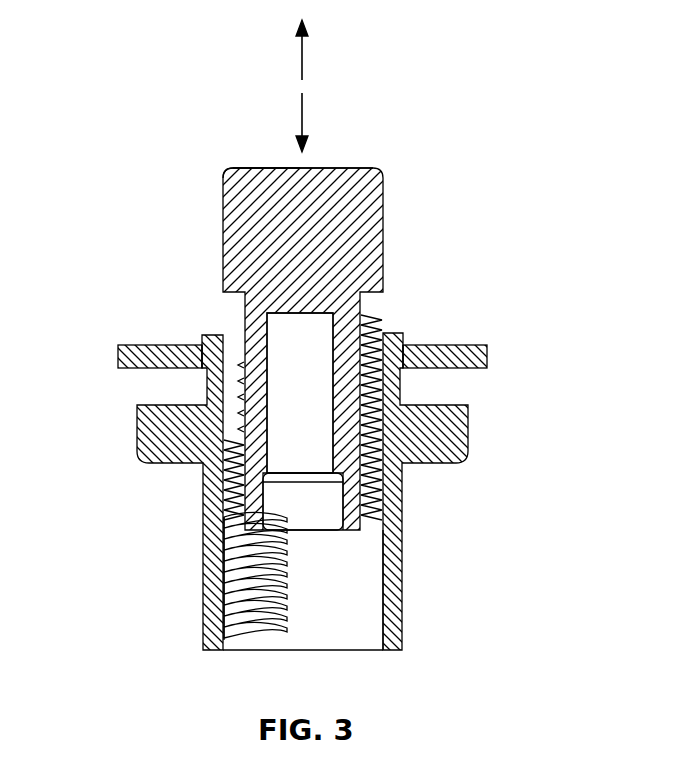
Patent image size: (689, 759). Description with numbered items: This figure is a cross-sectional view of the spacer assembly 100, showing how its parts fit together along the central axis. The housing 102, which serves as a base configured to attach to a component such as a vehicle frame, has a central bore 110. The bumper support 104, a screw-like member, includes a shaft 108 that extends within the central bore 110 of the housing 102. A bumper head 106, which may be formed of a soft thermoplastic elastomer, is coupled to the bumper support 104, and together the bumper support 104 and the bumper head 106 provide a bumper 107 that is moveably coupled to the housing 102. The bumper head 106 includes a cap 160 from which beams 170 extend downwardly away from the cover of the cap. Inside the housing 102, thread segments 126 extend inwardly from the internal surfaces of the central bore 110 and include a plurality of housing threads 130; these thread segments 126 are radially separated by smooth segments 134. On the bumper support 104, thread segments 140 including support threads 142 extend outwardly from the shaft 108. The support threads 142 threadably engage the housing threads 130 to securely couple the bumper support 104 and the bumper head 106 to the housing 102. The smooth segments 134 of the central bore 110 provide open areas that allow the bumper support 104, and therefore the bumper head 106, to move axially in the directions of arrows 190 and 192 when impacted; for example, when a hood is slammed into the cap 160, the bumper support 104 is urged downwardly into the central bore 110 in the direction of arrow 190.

The spacer assembly 100 is at (197, 120).
The housing 102 is at (402, 607).
The bumper support 104 is at (306, 347).
The bumper head 106 is at (384, 191).
The bumper 107 is at (214, 190).
The shaft 108 is at (305, 440).
The central bore 110 is at (308, 622).
The thread segments 126 is at (243, 556).
The housing threads 130 is at (226, 618).
The smooth segments 134 is at (343, 612).
The thread segments 140 is at (393, 386).
The support threads 142 is at (395, 364).
The cap 160 is at (350, 168).
The beams 170 is at (260, 362).
The arrow 190 is at (302, 120).
The arrow 192 is at (302, 50).